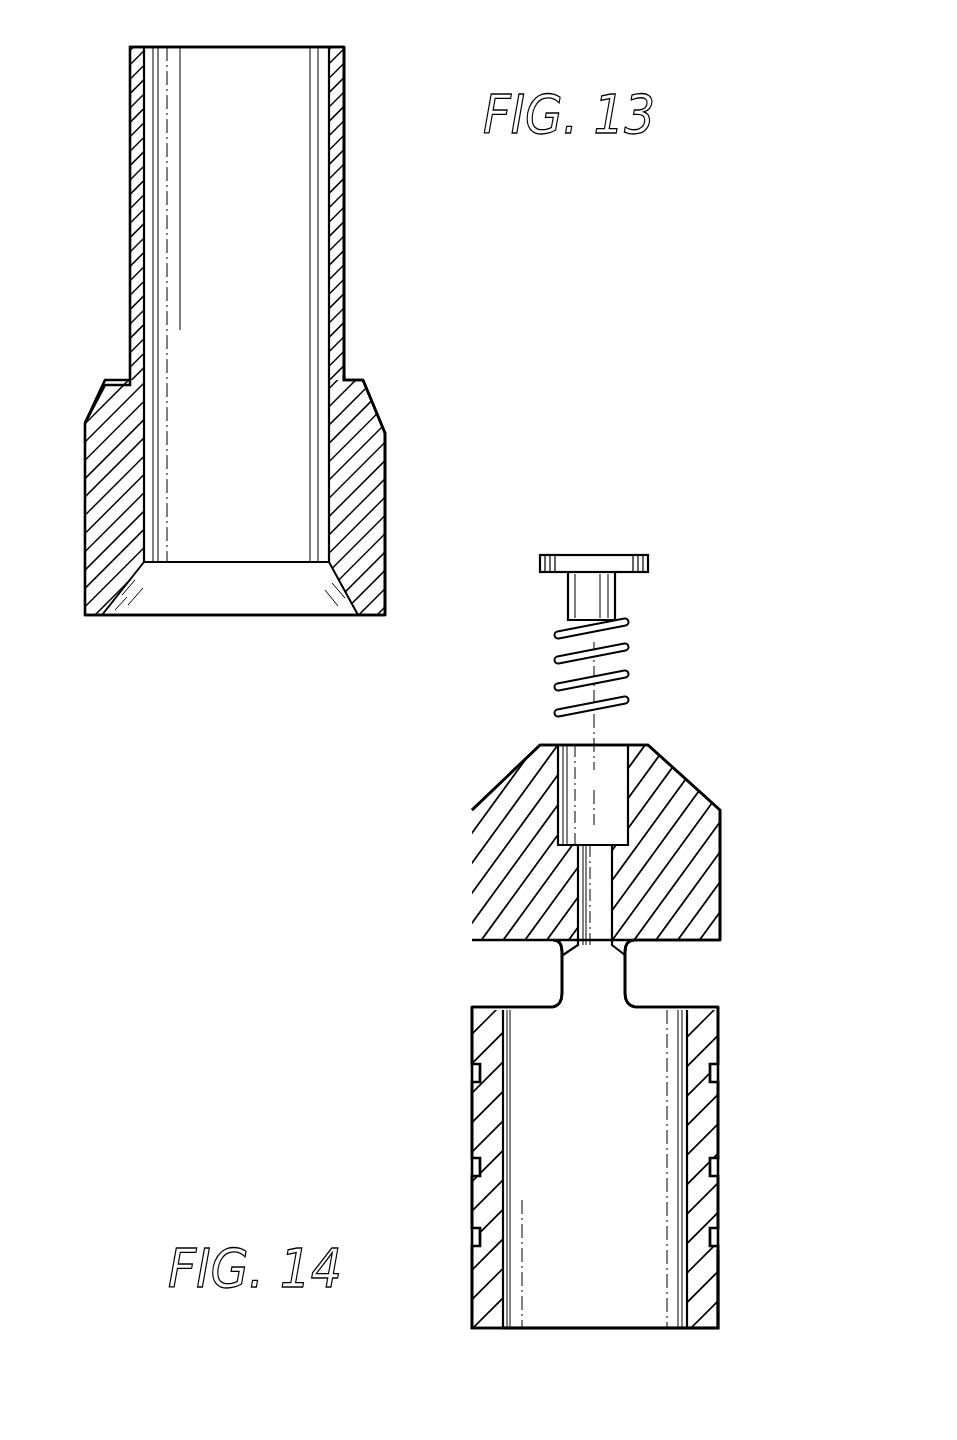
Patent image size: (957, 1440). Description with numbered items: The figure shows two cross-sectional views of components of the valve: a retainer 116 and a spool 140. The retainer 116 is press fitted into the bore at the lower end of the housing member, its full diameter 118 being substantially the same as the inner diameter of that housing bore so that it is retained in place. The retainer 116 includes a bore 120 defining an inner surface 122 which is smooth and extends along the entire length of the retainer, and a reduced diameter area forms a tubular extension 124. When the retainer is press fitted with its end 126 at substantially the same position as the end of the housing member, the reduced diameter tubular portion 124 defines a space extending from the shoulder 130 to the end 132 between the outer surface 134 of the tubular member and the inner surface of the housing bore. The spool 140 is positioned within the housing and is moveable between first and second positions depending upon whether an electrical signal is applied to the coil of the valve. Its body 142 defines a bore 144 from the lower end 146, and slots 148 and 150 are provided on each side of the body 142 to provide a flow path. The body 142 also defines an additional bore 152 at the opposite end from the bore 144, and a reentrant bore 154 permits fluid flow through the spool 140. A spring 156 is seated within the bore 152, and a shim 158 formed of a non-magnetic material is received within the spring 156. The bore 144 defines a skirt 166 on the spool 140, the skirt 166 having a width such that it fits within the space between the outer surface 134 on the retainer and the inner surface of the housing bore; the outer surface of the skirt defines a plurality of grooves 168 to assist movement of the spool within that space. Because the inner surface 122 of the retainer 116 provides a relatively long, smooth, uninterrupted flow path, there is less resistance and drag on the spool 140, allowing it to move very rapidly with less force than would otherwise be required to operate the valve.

In FIG. 13, the retainer 116 is at (346, 375).
In FIG. 13, the full diameter 118 is at (385, 460).
In FIG. 13, the bore 120 is at (235, 533).
In FIG. 13, the inner surface 122 is at (144, 300).
In FIG. 13, the tubular extension 124 is at (130, 207).
In FIG. 13, the end 126 is at (95, 617).
In FIG. 13, the shoulder 130 is at (113, 385).
In FIG. 13, the end 132 is at (335, 47).
In FIG. 13, the outer surface 134 is at (344, 215).
In FIG. 14, the spool 140 is at (722, 778).
In FIG. 14, the body 142 is at (690, 850).
In FIG. 14, the bore 144 is at (588, 1270).
In FIG. 14, the lower end 146 is at (705, 1330).
In FIG. 14, the slot 148 is at (690, 972).
In FIG. 14, the slot 150 is at (522, 975).
In FIG. 14, the additional bore 152 is at (583, 762).
In FIG. 14, the reentrant bore 154 is at (588, 882).
In FIG. 14, the spring 156 is at (625, 650).
In FIG. 14, the shim 158 is at (608, 555).
In FIG. 14, the skirt 166 is at (485, 1122).
In FIG. 14, the grooves 168 is at (718, 1240).